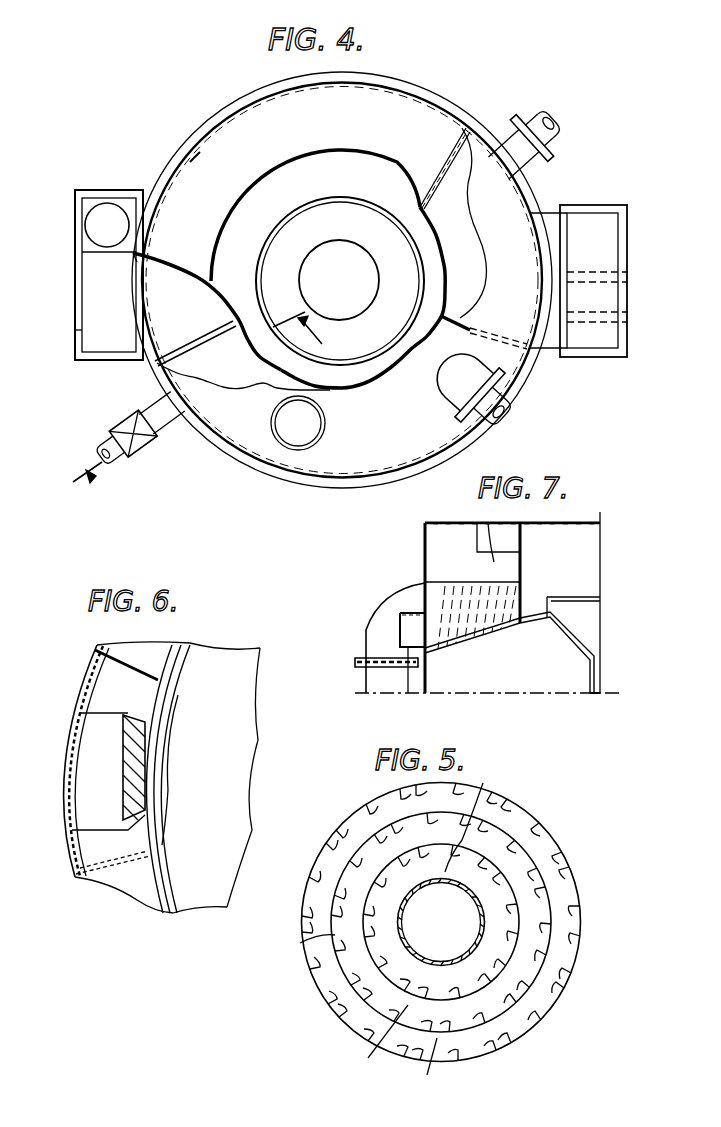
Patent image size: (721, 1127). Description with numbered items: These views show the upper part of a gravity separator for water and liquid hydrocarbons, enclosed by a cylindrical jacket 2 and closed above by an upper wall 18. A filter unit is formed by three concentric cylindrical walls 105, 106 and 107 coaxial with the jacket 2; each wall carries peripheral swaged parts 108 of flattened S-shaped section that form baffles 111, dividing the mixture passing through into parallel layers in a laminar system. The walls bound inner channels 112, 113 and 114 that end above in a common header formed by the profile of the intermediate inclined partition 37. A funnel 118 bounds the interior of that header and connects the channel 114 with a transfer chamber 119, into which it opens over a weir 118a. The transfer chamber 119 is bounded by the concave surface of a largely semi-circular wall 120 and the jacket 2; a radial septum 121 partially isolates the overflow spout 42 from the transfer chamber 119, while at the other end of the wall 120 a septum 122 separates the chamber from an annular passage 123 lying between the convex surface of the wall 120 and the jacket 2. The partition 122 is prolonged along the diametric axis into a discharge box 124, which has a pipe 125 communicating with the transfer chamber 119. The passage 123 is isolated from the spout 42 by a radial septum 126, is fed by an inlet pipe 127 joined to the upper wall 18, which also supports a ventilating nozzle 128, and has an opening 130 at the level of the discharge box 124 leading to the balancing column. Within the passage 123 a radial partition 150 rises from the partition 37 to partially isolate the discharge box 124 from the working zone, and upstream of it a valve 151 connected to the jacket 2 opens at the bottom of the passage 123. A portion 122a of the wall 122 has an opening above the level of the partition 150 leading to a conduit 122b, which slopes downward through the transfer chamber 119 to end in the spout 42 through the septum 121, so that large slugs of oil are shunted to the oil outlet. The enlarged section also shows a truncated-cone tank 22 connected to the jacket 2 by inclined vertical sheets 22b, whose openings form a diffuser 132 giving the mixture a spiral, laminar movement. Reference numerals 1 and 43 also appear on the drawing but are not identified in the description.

In FIG. 4, the casing 1 is at (197, 442).
In FIG. 6, the casing 1 is at (70, 832).
In FIG. 4, the jacket 2 is at (232, 466).
In FIG. 6, the jacket 2 is at (65, 760).
In FIG. 4, the upper wall 18 is at (338, 478).
In FIG. 7, the upper wall 18 is at (456, 522).
In FIG. 6, the tank 22 is at (153, 868).
In FIG. 6, the vertical sheets 22b is at (142, 794).
In FIG. 7, the intermediate partition 37 is at (460, 648).
In FIG. 4, the overflow spout 42 is at (532, 242).
In FIG. 4, the nozzle 43 is at (535, 168).
In FIG. 5, the concentric cylindrical wall 105 is at (512, 808).
In FIG. 5, the concentric cylindrical wall 106 is at (545, 892).
In FIG. 5, the concentric cylindrical wall 107 is at (520, 932).
In FIG. 5, the swaged parts 108 is at (562, 853).
In FIG. 5, the baffles 111 is at (340, 895).
In FIG. 5, the inner channel 112 is at (421, 1067).
In FIG. 5, the inner channel 113 is at (374, 1040).
In FIG. 5, the inner channel 114 is at (480, 818).
In FIG. 4, the funnel 118 is at (330, 244).
In FIG. 7, the funnel 118 is at (596, 684).
In FIG. 5, the funnel 118 is at (424, 940).
In FIG. 4, the weir 118a is at (262, 282).
In FIG. 7, the weir 118a is at (556, 605).
In FIG. 4, the transfer chamber 119 is at (315, 215).
In FIG. 4, the semi-circular wall 120 is at (316, 319).
In FIG. 7, the semi-circular wall 120 is at (521, 586).
In FIG. 4, the radial septum 121 is at (421, 168).
In FIG. 4, the septum 122 is at (226, 302).
In FIG. 4, the wall portion 122a is at (165, 244).
In FIG. 7, the wall portion 122a is at (486, 526).
In FIG. 4, the conduit 122b is at (190, 162).
In FIG. 7, the conduit 122b is at (508, 549).
In FIG. 4, the annular passage 123 is at (301, 298).
In FIG. 7, the annular passage 123 is at (424, 538).
In FIG. 4, the discharge box 124 is at (72, 300).
In FIG. 7, the discharge box 124 is at (407, 589).
In FIG. 4, the pipe 125 is at (108, 200).
In FIG. 4, the radial septum 126 is at (465, 328).
In FIG. 4, the inlet pipe 127 is at (520, 398).
In FIG. 4, the ventilating nozzle 128 is at (312, 420).
In FIG. 4, the opening 130 is at (75, 330).
In FIG. 6, the diffuser 132 is at (148, 746).
In FIG. 4, the radial partition 150 is at (189, 343).
In FIG. 7, the radial partition 150 is at (473, 566).
In FIG. 4, the valve 151 is at (130, 412).
In FIG. 7, the valve 151 is at (407, 627).